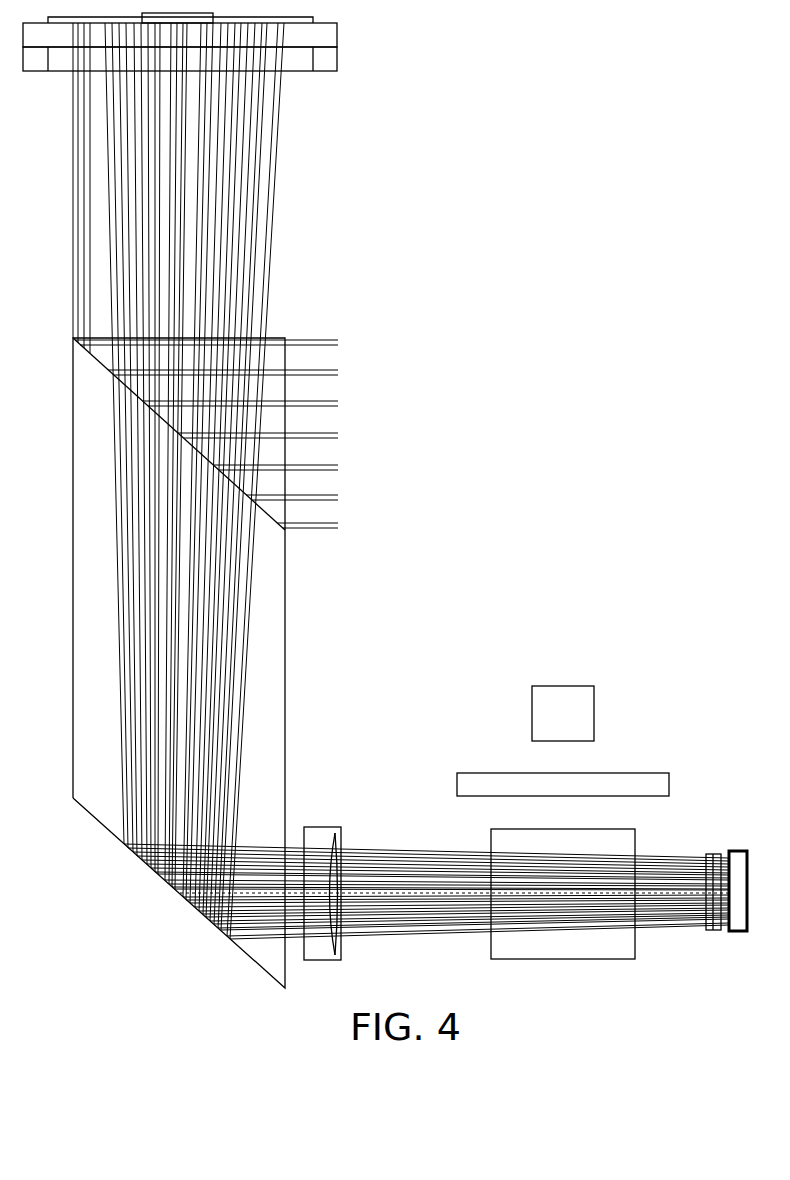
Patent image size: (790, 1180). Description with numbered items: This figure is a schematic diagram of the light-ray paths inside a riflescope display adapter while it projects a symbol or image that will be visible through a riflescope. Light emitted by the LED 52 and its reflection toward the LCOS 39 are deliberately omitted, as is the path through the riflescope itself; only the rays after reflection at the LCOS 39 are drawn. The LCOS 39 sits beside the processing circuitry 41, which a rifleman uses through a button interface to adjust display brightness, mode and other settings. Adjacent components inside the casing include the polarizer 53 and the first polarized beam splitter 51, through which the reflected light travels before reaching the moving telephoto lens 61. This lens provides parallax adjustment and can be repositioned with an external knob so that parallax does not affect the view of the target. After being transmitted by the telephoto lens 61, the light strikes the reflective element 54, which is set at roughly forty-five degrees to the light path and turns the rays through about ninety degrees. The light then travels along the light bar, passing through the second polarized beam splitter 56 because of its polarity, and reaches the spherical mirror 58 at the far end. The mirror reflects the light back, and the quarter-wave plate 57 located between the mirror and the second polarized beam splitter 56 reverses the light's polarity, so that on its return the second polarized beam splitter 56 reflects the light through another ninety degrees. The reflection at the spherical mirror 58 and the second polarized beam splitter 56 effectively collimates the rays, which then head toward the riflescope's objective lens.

The spherical mirror 58 is at (337, 30).
The quarter-wave plate 57 is at (337, 62).
The second polarized beam splitter 56 is at (92, 350).
The reflective element 54 is at (107, 827).
The moving telephoto lens 61 is at (334, 833).
The first polarized beam splitter 51 is at (573, 960).
The LED 52 is at (594, 711).
The polarizer 53 is at (669, 786).
The LCOS 39 is at (712, 932).
The processing circuitry 41 is at (745, 933).